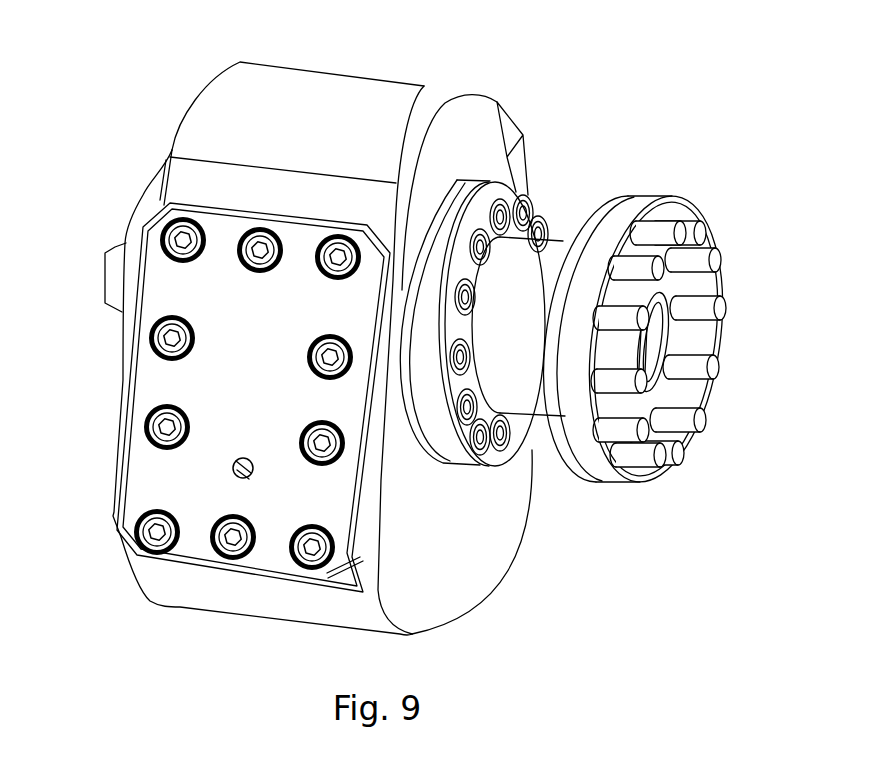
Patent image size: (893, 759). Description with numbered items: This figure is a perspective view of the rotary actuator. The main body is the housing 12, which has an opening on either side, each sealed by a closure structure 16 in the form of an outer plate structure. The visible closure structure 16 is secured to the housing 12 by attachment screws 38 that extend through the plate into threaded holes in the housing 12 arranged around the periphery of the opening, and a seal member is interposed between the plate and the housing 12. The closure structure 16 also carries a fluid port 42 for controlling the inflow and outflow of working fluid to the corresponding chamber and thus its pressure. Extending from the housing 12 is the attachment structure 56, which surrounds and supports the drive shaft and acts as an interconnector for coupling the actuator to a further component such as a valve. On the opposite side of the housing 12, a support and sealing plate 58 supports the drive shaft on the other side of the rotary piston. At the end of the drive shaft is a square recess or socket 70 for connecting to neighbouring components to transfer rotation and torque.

The housing 12 is at (420, 85).
The closure structure 16 is at (225, 381).
The attachment screws 38 is at (327, 273).
The fluid port 42 is at (235, 476).
The attachment structure 56 is at (610, 213).
The support and sealing plate 58 is at (148, 193).
The square recess or socket 70 is at (655, 343).